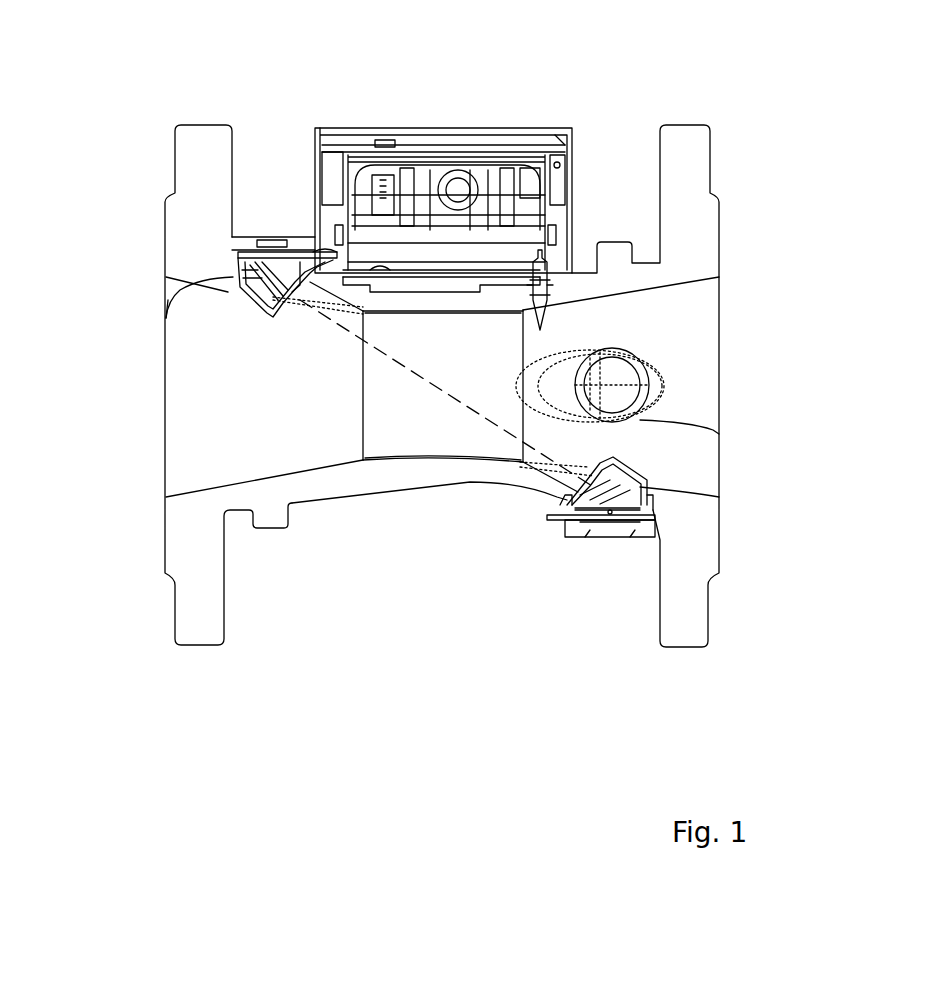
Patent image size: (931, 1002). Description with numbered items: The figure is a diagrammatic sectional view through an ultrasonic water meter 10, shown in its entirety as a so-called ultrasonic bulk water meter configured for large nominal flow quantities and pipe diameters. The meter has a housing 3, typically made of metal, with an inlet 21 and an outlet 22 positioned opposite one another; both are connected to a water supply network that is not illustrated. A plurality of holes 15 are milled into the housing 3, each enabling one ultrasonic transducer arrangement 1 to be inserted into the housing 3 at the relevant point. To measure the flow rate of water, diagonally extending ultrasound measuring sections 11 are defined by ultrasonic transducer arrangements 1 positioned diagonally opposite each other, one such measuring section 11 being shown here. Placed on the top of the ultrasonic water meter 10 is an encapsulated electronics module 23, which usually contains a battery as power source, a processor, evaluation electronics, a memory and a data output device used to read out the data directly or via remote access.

The ultrasonic water meter 10 is at (393, 24).
The ultrasonic transducer arrangement 1 is at (280, 222).
The housing 3 is at (436, 386).
The ultrasound measuring section 11 is at (441, 387).
The hole 15 is at (165, 318).
The inlet 21 is at (165, 395).
The outlet 22 is at (719, 368).
The encapsulated electronics module 23 is at (538, 128).